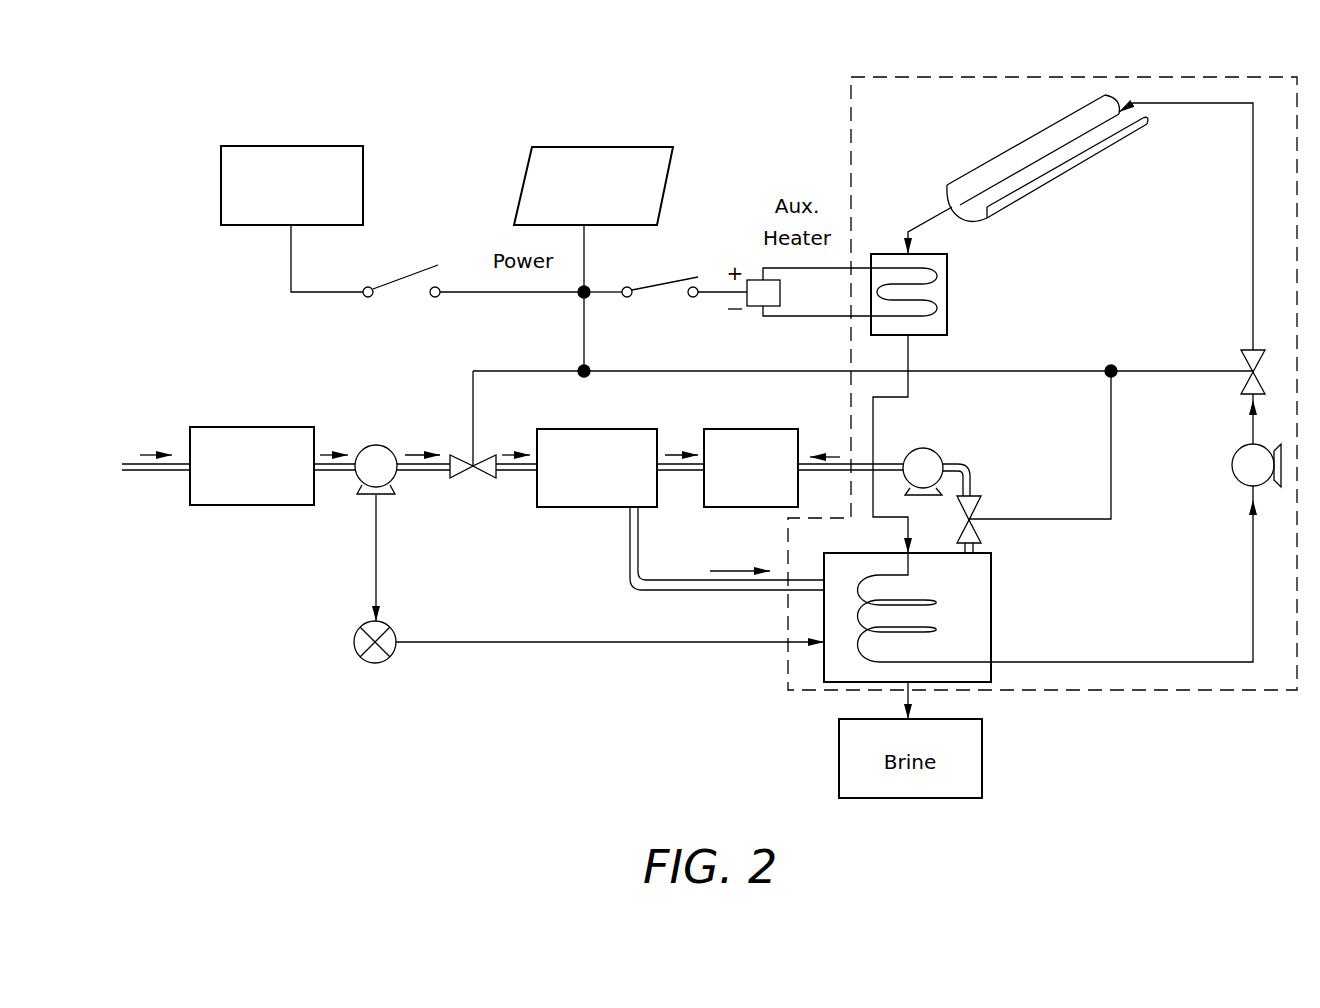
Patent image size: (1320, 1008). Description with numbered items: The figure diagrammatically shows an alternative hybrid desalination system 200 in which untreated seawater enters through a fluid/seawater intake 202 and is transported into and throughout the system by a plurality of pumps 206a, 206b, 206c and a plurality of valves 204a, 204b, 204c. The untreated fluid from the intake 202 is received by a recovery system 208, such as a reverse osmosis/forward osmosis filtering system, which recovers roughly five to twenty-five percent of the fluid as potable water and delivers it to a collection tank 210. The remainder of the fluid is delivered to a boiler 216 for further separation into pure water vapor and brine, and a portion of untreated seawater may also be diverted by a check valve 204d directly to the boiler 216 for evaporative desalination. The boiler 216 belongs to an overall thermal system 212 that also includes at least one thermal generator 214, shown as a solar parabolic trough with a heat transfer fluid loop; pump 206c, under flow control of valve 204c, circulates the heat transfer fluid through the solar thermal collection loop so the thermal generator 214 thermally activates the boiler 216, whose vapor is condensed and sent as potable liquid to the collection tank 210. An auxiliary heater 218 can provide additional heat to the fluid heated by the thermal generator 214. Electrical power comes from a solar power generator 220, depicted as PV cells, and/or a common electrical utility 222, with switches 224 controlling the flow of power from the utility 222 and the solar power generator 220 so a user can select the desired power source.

The hybrid desalination system 200 is at (198, 100).
The fluid/seawater intake 202 is at (220, 427).
The valve 204a is at (470, 481).
The valve 204b is at (985, 500).
The valve 204c is at (1250, 349).
The check valve 204d is at (397, 626).
The pump 206a is at (376, 445).
The pump 206b is at (940, 448).
The pump 206c is at (1232, 466).
The recovery system 208 is at (580, 510).
The collection tank 210 is at (755, 429).
The thermal system 212 is at (851, 140).
The thermal generator 214 is at (1022, 135).
The boiler 216 is at (991, 628).
The auxiliary heater 218 is at (947, 290).
The solar power generator 220 is at (598, 147).
The electrical utility 222 is at (291, 146).
The switches 224 is at (398, 298).